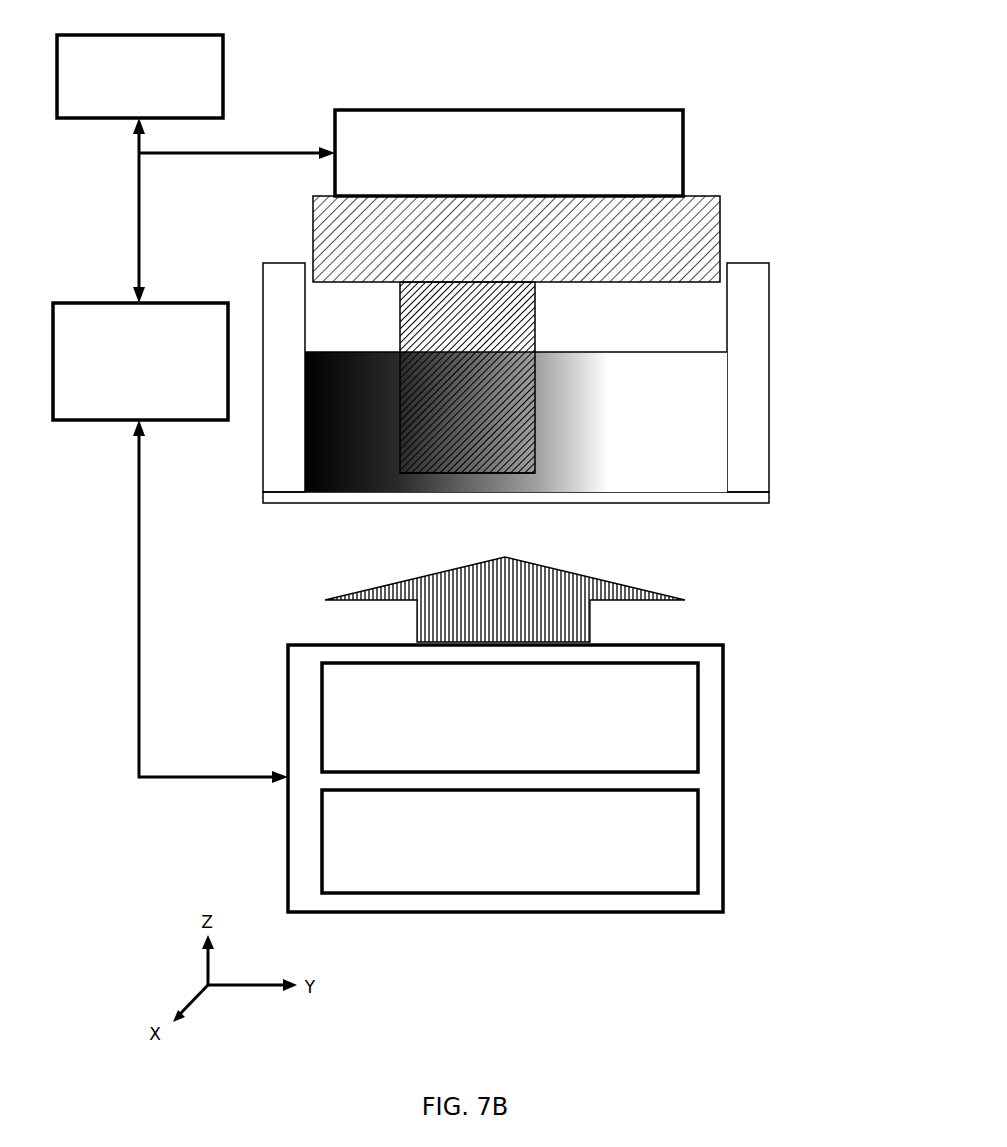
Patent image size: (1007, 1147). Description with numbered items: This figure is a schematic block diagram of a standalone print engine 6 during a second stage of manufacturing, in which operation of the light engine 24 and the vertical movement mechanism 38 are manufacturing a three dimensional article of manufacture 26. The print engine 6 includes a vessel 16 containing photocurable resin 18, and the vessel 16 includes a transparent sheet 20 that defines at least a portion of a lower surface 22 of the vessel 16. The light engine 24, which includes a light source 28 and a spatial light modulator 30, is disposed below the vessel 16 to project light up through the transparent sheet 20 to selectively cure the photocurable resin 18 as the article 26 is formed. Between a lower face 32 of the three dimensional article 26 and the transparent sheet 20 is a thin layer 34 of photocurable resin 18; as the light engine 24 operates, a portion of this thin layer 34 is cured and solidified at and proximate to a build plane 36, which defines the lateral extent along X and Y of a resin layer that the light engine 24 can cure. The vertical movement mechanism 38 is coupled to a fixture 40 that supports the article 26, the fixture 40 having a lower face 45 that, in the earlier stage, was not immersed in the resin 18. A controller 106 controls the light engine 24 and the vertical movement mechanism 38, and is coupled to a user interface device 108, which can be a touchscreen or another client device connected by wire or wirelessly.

The print engine 6 is at (648, 62).
The user interface device 108 is at (223, 73).
The controller 106 is at (97, 420).
The vertical movement mechanism 38 is at (683, 150).
The fixture 40 is at (720, 220).
The lower face of fixture 45 is at (588, 282).
The three dimensional article of manufacture 26 is at (400, 325).
The vessel 16 is at (539, 405).
The photocurable resin 18 is at (653, 378).
The lower surface of vessel 22 is at (295, 500).
The transparent sheet 20 is at (710, 498).
The thin layer of photocurable resin 34 is at (423, 487).
The lower face of three dimensional article 32 is at (478, 473).
The build plane 36 is at (520, 475).
The light engine 24 is at (723, 697).
The spatial light modulator 30 is at (698, 752).
The light source 28 is at (698, 850).